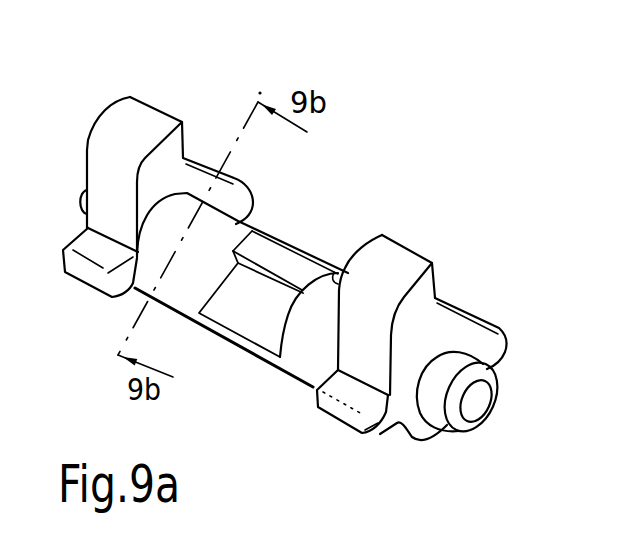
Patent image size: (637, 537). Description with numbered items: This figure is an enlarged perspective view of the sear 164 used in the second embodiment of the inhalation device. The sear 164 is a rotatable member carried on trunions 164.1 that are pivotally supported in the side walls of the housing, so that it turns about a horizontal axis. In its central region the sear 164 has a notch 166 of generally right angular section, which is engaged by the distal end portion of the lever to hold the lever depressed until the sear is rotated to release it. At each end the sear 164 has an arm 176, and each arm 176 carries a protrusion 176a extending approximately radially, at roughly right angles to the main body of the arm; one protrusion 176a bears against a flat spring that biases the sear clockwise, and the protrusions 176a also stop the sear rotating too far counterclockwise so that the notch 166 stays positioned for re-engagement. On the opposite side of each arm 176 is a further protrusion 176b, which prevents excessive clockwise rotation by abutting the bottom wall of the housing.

The sear 164 is at (310, 230).
The trunion 164.1 is at (472, 413).
The notch 166 is at (260, 330).
The arm 176 is at (123, 133).
The protrusion 176a is at (84, 272).
The further protrusion 176b is at (500, 328).